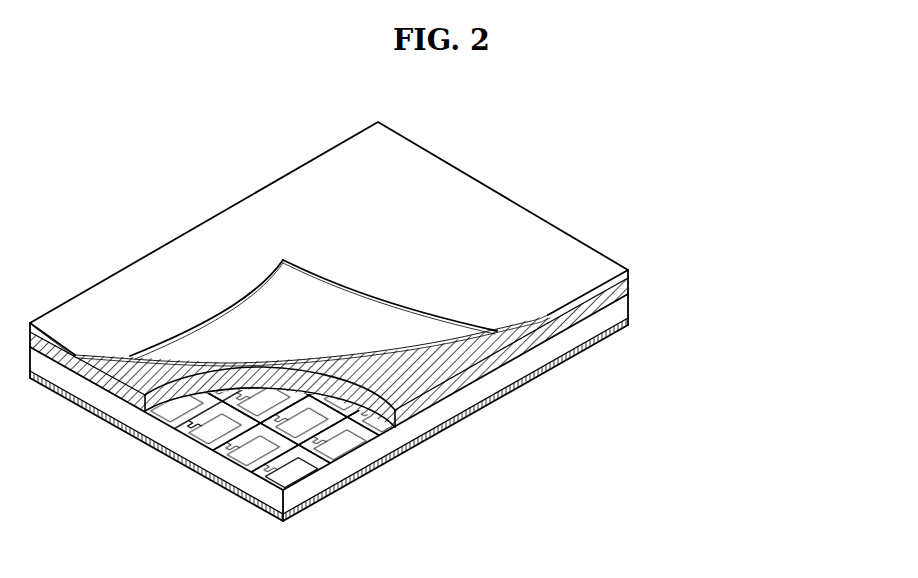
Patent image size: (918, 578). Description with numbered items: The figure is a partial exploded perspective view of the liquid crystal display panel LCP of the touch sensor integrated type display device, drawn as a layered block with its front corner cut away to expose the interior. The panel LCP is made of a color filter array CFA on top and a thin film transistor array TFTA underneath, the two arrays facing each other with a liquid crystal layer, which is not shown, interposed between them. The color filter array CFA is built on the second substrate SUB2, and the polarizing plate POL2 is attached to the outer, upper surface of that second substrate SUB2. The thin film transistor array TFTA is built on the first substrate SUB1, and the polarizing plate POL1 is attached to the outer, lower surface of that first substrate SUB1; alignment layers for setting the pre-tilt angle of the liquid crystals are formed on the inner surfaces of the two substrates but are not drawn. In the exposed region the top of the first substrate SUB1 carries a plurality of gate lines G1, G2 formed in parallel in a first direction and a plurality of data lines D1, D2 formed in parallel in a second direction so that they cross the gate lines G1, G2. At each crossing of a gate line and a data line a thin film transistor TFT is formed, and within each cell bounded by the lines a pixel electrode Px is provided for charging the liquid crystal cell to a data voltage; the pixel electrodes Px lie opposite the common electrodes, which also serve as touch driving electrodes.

The liquid crystal display panel LCP is at (429, 336).
The color filter array CFA is at (409, 274).
The thin film transistor array TFTA is at (400, 422).
The polarizing plate POL2 is at (630, 271).
The second substrate SUB2 is at (632, 284).
The first substrate SUB1 is at (632, 305).
The polarizing plate POL1 is at (632, 323).
The gate line G1 is at (337, 470).
The gate line G2 is at (378, 448).
The data line D1 is at (243, 477).
The data line D2 is at (213, 448).
The pixel electrode Px is at (270, 483).
The thin film transistor TFT is at (183, 440).